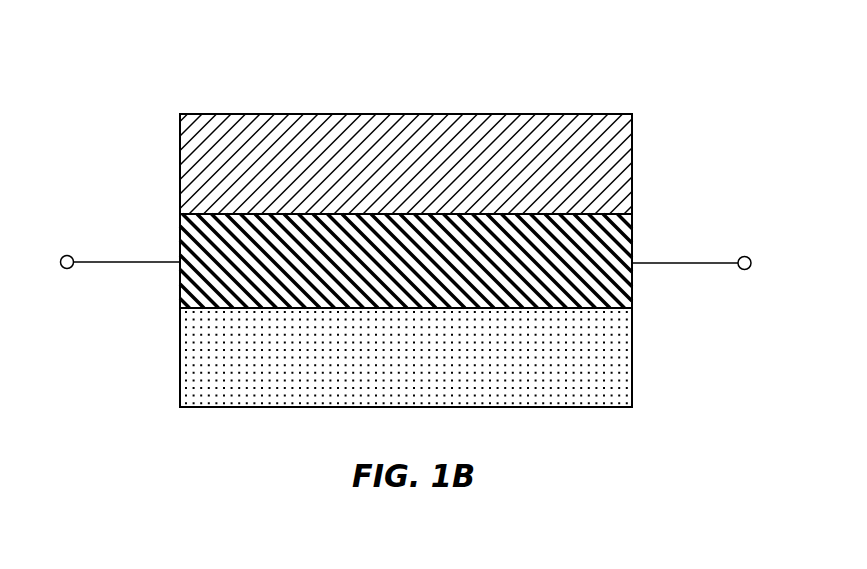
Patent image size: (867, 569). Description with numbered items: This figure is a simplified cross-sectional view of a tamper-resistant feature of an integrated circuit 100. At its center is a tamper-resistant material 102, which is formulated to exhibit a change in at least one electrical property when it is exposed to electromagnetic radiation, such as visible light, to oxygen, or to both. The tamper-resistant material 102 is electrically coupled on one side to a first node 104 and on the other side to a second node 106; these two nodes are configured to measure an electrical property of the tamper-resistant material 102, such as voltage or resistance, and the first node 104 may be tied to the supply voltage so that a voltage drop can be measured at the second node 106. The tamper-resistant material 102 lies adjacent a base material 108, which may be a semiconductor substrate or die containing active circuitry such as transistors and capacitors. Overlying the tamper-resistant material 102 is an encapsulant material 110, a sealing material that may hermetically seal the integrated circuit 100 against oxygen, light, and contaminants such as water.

The integrated circuit 100 is at (129, 95).
The tamper-resistant material 102 is at (603, 238).
The first node 104 is at (68, 268).
The second node 106 is at (745, 270).
The base material 108 is at (615, 351).
The encapsulant material 110 is at (597, 167).